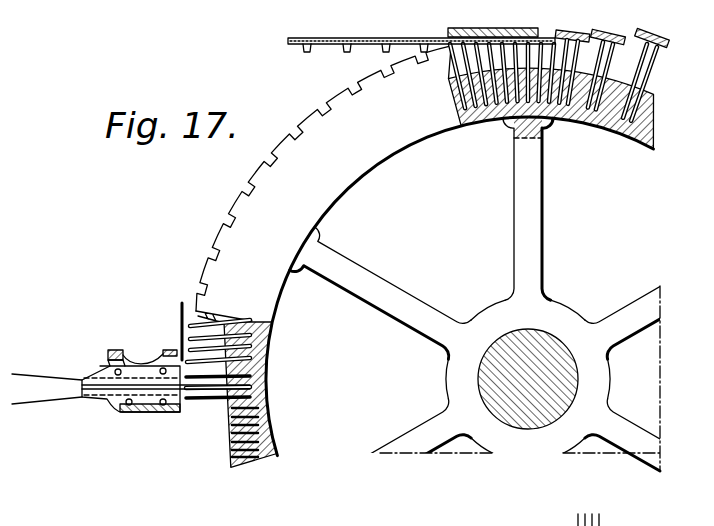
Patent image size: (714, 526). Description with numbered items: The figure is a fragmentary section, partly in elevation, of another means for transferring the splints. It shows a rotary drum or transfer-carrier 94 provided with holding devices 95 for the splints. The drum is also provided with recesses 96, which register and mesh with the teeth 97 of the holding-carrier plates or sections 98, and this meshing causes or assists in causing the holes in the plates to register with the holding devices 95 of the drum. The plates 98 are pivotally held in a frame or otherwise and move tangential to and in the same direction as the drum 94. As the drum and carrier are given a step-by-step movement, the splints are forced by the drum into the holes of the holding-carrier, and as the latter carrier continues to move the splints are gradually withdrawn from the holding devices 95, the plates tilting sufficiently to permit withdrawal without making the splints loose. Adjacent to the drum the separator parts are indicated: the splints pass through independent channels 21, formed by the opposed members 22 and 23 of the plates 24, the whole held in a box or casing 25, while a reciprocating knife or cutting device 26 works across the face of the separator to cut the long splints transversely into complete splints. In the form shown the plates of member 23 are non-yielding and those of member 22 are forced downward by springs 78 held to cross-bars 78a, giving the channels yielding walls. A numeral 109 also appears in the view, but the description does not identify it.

In FIG. 17, the rotary drum or transfer-carrier 94 is at (276, 450).
In FIG. 17, the holding devices 95 is at (238, 463).
In FIG. 17, the recesses 96 is at (215, 248).
In FIG. 17, the teeth 97 is at (307, 47).
In FIG. 17, the holding-carrier plates or sections 98 is at (340, 43).
In FIG. 17, the reciprocating knife or cutting device 26 is at (181, 310).
In FIG. 17, the box or casing 25 is at (138, 415).
In FIG. 17, the opposed member 23 is at (135, 410).
In FIG. 17, the channels 21 is at (108, 396).
In FIG. 17, the plates 24 is at (82, 386).
In FIG. 17, the opposed member 22 is at (101, 361).
In FIG. 17, the cross-bars 78a is at (114, 352).
In FIG. 17, the springs 78 is at (139, 362).
In FIG. 18, the element of Fig. 18 109 is at (62, 520).